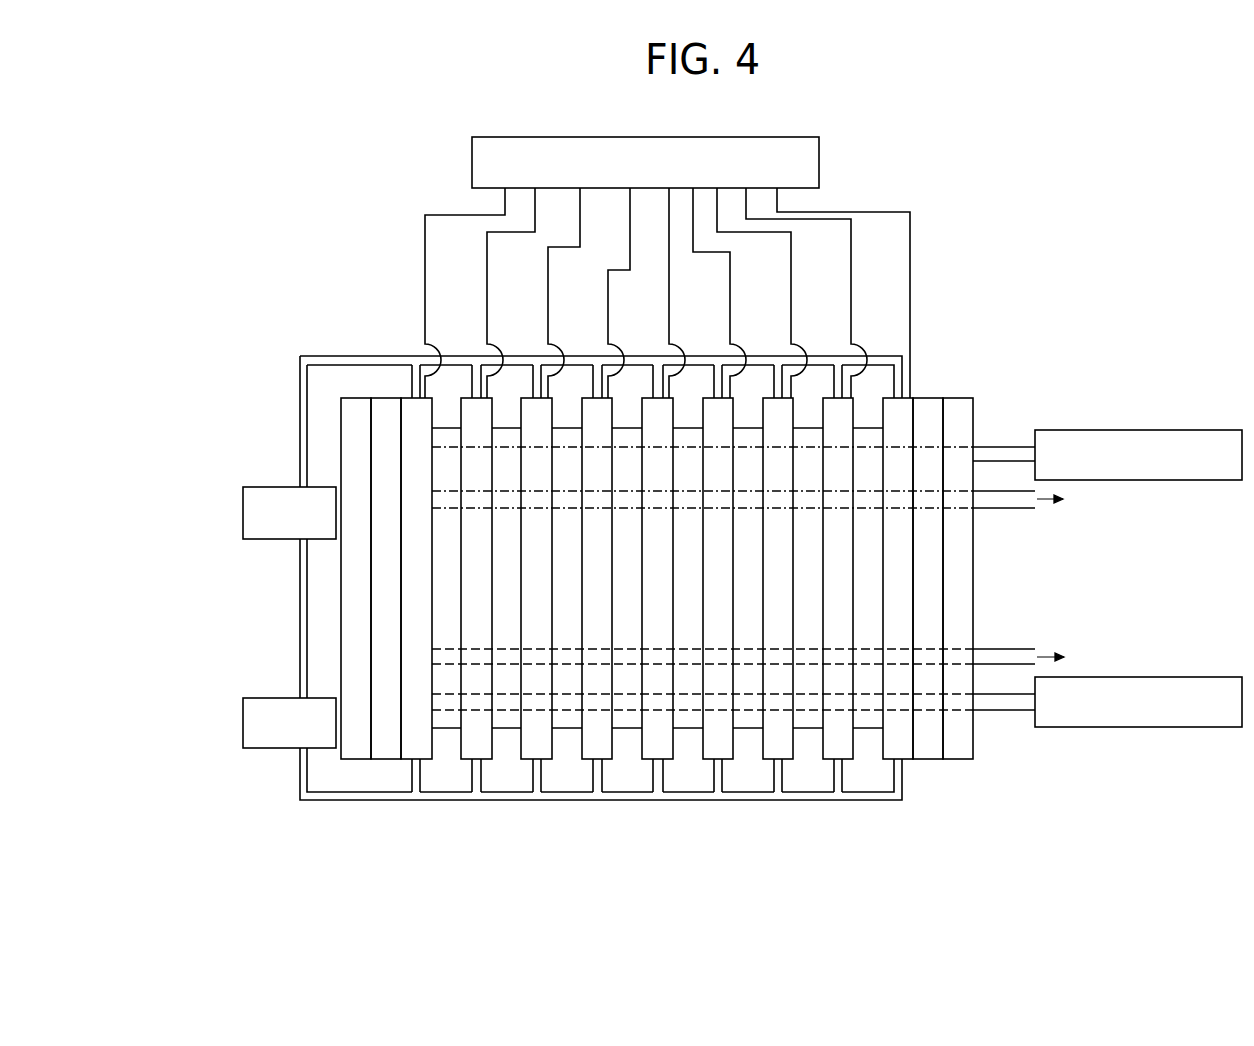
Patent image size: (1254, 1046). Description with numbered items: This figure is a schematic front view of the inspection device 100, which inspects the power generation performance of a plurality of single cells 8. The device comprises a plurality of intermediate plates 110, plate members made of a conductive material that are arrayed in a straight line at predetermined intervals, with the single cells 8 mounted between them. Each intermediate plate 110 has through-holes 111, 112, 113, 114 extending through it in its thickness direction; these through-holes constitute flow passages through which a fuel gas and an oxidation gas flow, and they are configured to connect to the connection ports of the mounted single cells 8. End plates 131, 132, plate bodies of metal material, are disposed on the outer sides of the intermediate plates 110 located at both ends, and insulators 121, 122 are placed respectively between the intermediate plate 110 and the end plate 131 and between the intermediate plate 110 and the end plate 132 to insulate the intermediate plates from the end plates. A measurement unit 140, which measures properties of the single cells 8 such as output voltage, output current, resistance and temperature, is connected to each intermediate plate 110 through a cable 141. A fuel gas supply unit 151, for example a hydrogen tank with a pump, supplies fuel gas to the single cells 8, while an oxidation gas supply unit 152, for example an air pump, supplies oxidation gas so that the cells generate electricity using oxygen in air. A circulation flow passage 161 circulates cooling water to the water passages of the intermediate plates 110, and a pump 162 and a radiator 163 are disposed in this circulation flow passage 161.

The inspection device 100 is at (1069, 193).
The intermediate plate 110 is at (905, 415).
The through-hole 111 is at (900, 447).
The through-hole 112 is at (900, 710).
The through-hole 113 is at (900, 648).
The through-hole 114 is at (900, 508).
The insulator 121 is at (928, 760).
The insulator 122 is at (386, 743).
The end plate 131 is at (958, 397).
The end plate 132 is at (357, 413).
The measurement unit 140 is at (820, 168).
The cable 141 is at (910, 260).
The fuel gas supply unit 151 is at (1137, 429).
The oxidation gas supply unit 152 is at (1128, 728).
The circulation flow passage 161 is at (623, 803).
The pump 162 is at (243, 516).
The radiator 163 is at (243, 725).
The single cell 8 is at (443, 420).